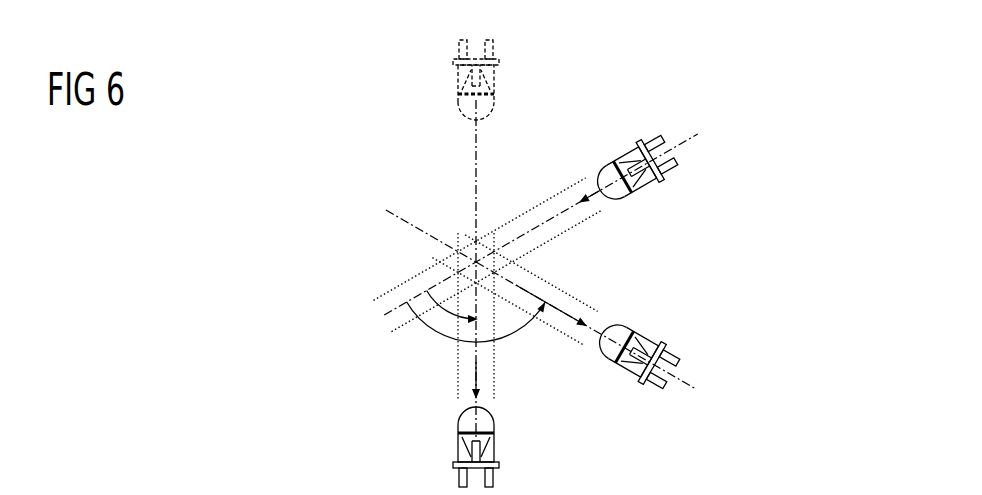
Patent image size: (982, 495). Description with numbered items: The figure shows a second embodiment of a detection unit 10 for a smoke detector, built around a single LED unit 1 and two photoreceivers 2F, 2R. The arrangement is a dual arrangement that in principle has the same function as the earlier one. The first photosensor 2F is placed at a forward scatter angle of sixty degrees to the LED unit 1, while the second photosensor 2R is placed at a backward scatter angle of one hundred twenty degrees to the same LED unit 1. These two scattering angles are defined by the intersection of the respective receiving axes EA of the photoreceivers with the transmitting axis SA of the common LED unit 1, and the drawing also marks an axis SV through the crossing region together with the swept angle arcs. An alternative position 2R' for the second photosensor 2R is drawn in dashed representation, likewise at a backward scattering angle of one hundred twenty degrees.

The detection unit 10 is at (712, 92).
The LED unit 1 is at (622, 198).
The second photosensor 2R is at (615, 356).
The alternative position of the second photosensor 2R' is at (503, 91).
The first photosensor 2F is at (467, 423).
The receiving axis EA is at (476, 185).
The transmitting axis SA is at (542, 225).
The symmetry axis SV is at (474, 252).